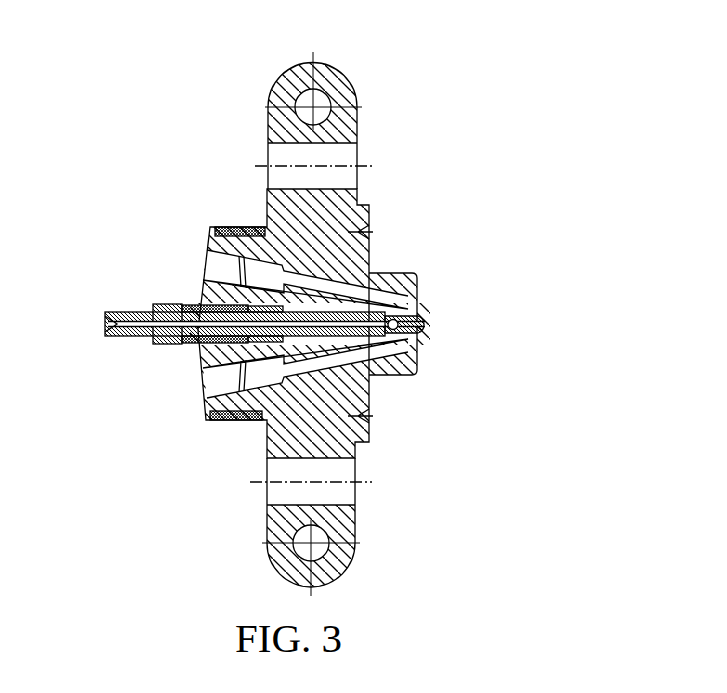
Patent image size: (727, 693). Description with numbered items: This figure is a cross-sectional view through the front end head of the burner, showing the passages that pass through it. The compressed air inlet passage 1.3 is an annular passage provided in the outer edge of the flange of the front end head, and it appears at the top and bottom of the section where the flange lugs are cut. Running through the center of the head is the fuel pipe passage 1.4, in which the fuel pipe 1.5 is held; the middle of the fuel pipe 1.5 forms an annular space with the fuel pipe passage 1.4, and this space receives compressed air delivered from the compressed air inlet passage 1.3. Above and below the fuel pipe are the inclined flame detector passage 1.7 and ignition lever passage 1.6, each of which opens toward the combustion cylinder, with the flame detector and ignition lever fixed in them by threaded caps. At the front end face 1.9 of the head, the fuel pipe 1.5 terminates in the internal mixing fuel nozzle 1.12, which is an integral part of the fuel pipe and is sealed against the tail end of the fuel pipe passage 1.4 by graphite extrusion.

The compressed air inlet passage 1.3 is at (310, 97).
The fuel pipe passage 1.4 is at (342, 313).
The fuel pipe 1.5 is at (135, 313).
The ignition lever passage 1.6 is at (208, 373).
The flame detector passage 1.7 is at (208, 257).
The front end face 1.9 is at (417, 285).
The internal mixing fuel nozzle 1.12 is at (427, 325).